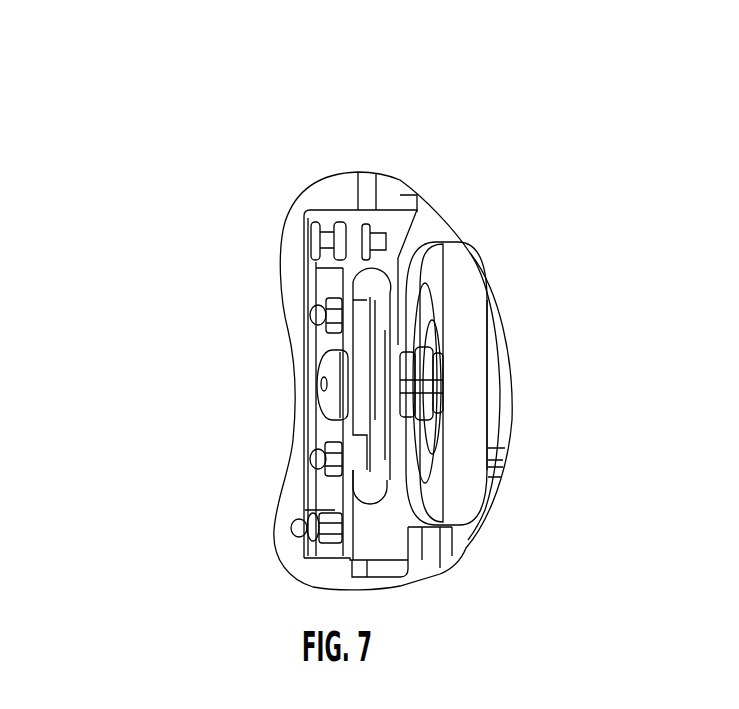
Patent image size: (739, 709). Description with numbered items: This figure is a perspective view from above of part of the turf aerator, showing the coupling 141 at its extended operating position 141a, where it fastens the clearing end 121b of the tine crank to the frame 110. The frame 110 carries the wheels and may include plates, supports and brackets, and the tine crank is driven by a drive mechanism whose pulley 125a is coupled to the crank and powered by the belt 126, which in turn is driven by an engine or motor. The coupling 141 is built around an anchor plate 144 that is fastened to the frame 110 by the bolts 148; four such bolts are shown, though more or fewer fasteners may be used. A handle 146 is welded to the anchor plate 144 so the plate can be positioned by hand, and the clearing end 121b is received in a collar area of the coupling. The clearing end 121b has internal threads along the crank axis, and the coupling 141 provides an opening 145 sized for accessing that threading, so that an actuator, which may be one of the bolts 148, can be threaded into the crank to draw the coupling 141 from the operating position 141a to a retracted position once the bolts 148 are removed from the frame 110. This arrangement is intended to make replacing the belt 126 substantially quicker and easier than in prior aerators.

The coupling 141 is at (383, 143).
The extended (operating) position 141a is at (256, 342).
The bolts 148 is at (311, 243).
The frame 110 is at (324, 271).
The opening 145 is at (321, 384).
The anchor plate 144 is at (330, 428).
The handle 146 is at (373, 493).
The clearing end 121b is at (437, 312).
The belt 126 is at (470, 395).
The pulley 125a is at (428, 497).